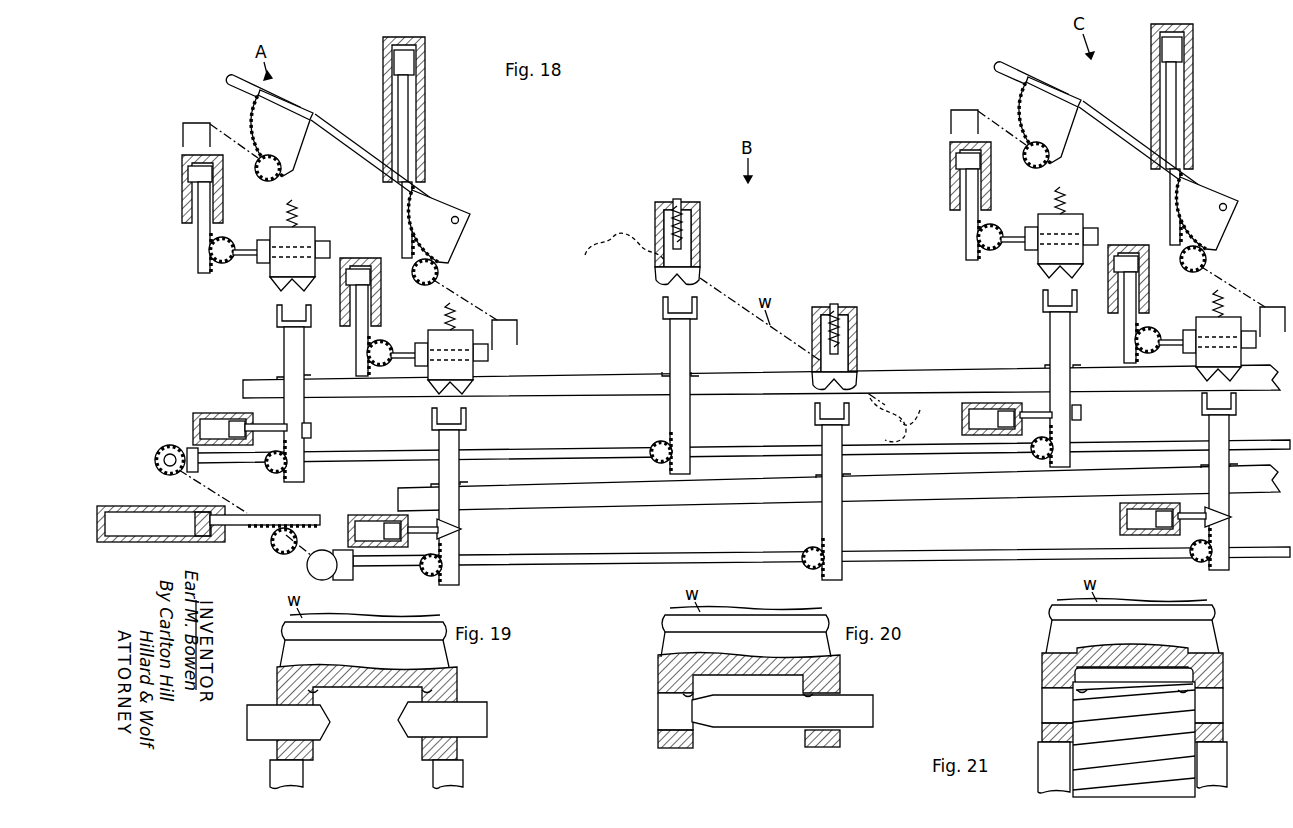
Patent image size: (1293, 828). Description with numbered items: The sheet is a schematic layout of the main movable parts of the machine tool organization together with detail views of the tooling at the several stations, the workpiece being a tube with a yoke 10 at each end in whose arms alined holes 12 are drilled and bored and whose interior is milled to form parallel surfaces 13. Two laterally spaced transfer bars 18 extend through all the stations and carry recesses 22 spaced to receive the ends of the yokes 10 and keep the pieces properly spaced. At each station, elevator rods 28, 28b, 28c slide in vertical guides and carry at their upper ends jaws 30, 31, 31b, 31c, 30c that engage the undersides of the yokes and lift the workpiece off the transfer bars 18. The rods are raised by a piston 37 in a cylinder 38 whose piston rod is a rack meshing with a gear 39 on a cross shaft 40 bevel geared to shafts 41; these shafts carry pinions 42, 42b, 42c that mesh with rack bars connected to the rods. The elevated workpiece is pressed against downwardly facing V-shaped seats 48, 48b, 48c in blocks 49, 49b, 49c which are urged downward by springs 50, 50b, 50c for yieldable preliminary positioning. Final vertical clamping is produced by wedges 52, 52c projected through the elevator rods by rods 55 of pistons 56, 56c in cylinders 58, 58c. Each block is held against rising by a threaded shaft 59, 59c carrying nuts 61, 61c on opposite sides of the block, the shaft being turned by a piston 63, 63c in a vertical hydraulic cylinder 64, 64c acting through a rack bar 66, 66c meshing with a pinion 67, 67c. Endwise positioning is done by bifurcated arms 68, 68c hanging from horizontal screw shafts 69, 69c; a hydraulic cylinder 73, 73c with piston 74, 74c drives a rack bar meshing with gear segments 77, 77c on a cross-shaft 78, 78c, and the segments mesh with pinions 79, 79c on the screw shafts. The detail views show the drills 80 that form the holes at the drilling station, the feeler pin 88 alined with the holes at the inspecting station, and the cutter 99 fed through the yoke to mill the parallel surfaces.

In FIG. 19, the yoke 10 is at (278, 683).
In FIG. 20, the yoke 10 is at (658, 681).
In FIG. 21, the yoke 10 is at (1223, 734).
In FIG. 19, the holes 12 is at (318, 692).
In FIG. 20, the holes 12 is at (660, 696).
In FIG. 21, the holes 12 is at (1042, 724).
In FIG. 21, the parallel surfaces 13 is at (1082, 710).
In FIG. 18, the transfer bars 18 is at (590, 392).
In FIG. 18, the recesses 22 is at (280, 378).
In FIG. 18, the elevator rods 28 is at (285, 342).
In FIG. 18, the elevator rod 28b is at (670, 360).
In FIG. 18, the elevator rod 28c is at (1052, 330).
In FIG. 18, the jaw 30 is at (468, 420).
In FIG. 18, the jaw 30c is at (1237, 404).
In FIG. 18, the jaw 31 is at (277, 320).
In FIG. 18, the jaw 31b is at (663, 312).
In FIG. 18, the jaw 31c is at (1043, 303).
In FIG. 18, the piston 37 is at (200, 512).
In FIG. 18, the cylinder 38 is at (137, 507).
In FIG. 18, the gear 39 is at (257, 587).
In FIG. 18, the cross shaft 40 is at (225, 494).
In FIG. 18, the shafts 41 is at (240, 462).
In FIG. 18, the pinions 42 is at (280, 476).
In FIG. 18, the pinion 42b is at (657, 444).
In FIG. 18, the pinion 42c is at (1030, 455).
In FIG. 18, the V-shaped seats 48 is at (280, 290).
In FIG. 18, the V-shaped seat 48b is at (700, 280).
In FIG. 18, the V-shaped seat 48c is at (1042, 276).
In FIG. 18, the blocks 49 is at (305, 233).
In FIG. 18, the V-block 49b is at (700, 225).
In FIG. 18, the V-block 49c is at (1072, 215).
In FIG. 18, the springs 50 is at (298, 210).
In FIG. 18, the spring 50b is at (680, 203).
In FIG. 18, the spring 50c is at (1066, 190).
In FIG. 18, the wedges 52 is at (312, 432).
In FIG. 18, the wedge 52c is at (1081, 412).
In FIG. 18, the rods 55 is at (266, 426).
In FIG. 18, the pistons 56 is at (238, 420).
In FIG. 18, the piston 56c is at (1008, 404).
In FIG. 18, the cylinders 58 is at (215, 413).
In FIG. 18, the cylinder 58c is at (980, 403).
In FIG. 18, the shaft 59 is at (246, 250).
In FIG. 18, the shaft 59c is at (1170, 338).
In FIG. 18, the nuts 61 is at (328, 243).
In FIG. 18, the nuts 61c is at (1092, 228).
In FIG. 18, the piston 63 is at (190, 172).
In FIG. 18, the piston 63c is at (958, 162).
In FIG. 18, the hydraulic cylinder 64 is at (188, 197).
In FIG. 18, the hydraulic cylinder 64c is at (957, 190).
In FIG. 18, the rack bar 66 is at (198, 250).
In FIG. 18, the rack bar 66c is at (965, 235).
In FIG. 18, the pinion 67 is at (218, 262).
In FIG. 18, the pinion 67c is at (1150, 330).
In FIG. 18, the bifurcated arms 68 is at (183, 137).
In FIG. 19, the bifurcated arms 68 is at (275, 783).
In FIG. 18, the bifurcated arms 68c is at (950, 128).
In FIG. 21, the bifurcated arms 68c is at (1040, 780).
In FIG. 18, the shafts 69 is at (236, 142).
In FIG. 18, the shaft 69c is at (1005, 125).
In FIG. 18, the hydraulic cylinder 73 is at (425, 132).
In FIG. 18, the hydraulic cylinder 73c is at (1195, 108).
In FIG. 18, the piston 74 is at (415, 60).
In FIG. 18, the piston 74c is at (1185, 45).
In FIG. 18, the gear segments 77 is at (257, 98).
In FIG. 18, the gear segments 77c is at (1019, 100).
In FIG. 18, the cross-shaft 78 is at (340, 140).
In FIG. 18, the cross-shaft 78c is at (1100, 120).
In FIG. 18, the pinions 79 is at (263, 178).
In FIG. 18, the pinions 79c is at (1050, 160).
In FIG. 19, the drills 80 is at (265, 740).
In FIG. 20, the pin 88 is at (772, 727).
In FIG. 21, the cutter 99 is at (1078, 690).